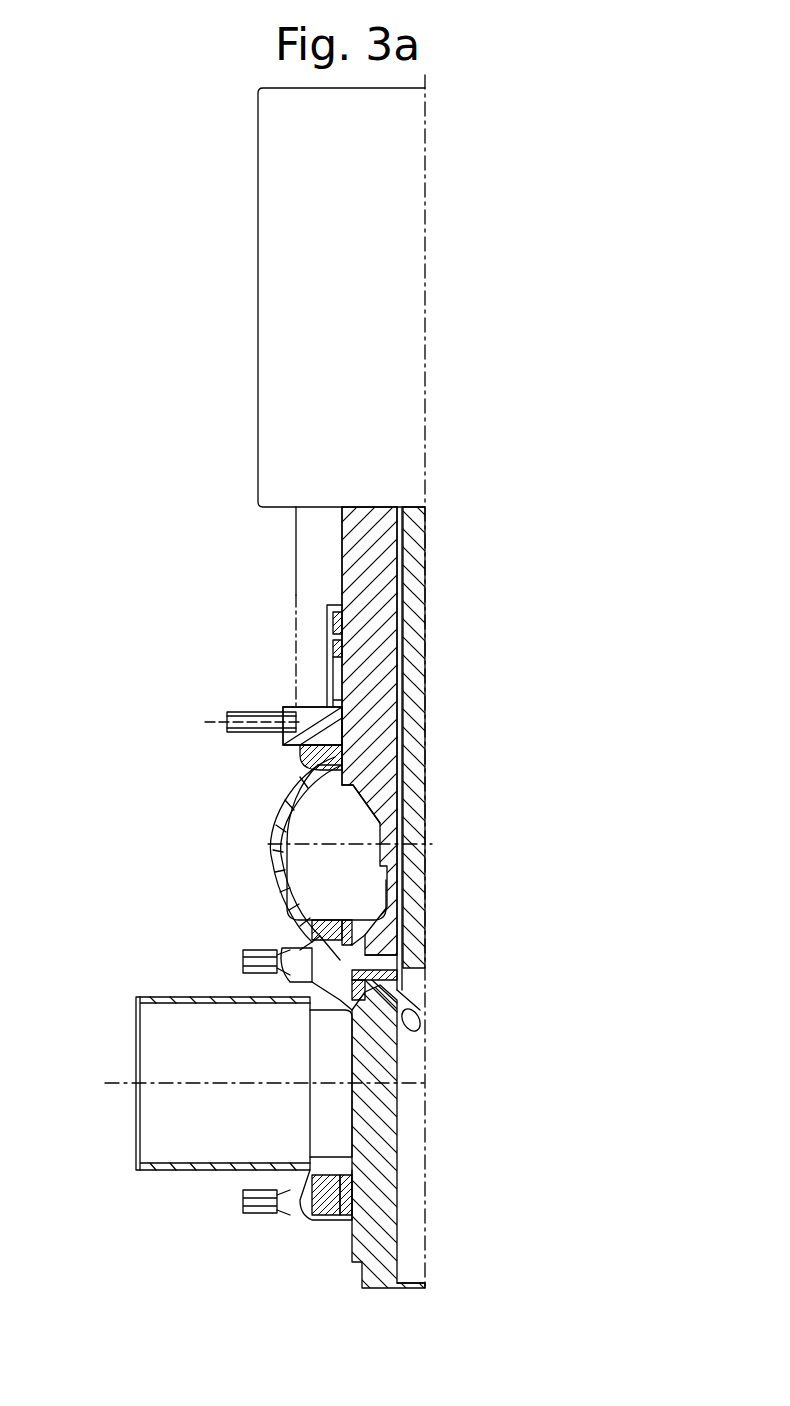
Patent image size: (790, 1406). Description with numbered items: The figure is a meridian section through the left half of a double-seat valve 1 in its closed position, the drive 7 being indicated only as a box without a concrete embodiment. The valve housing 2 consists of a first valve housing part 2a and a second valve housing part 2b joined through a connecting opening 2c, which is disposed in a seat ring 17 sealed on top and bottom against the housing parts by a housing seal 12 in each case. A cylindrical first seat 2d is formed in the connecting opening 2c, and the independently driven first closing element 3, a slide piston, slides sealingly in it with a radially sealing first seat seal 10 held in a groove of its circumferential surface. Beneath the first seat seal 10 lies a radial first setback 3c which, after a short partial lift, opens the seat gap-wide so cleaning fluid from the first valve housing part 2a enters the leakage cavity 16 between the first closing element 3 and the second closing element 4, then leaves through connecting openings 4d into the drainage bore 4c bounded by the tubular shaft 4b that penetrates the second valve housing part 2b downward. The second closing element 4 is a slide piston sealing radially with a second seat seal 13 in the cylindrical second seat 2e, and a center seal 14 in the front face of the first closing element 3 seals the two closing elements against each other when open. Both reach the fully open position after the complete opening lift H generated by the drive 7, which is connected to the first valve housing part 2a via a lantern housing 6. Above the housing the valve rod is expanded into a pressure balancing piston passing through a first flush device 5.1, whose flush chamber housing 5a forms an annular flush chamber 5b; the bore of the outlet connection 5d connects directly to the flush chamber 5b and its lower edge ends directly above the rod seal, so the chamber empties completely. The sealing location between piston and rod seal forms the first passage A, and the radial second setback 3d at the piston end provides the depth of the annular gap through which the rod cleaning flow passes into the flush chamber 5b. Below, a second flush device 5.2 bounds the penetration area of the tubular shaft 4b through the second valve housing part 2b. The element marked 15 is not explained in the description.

The drive 7 is at (242, 318).
The lantern housing 6 is at (296, 545).
The first closing element 3 is at (370, 948).
The housing wall 15 is at (400, 740).
The radial second setback 3d is at (400, 782).
The flush chamber housing 5a is at (330, 640).
The annular flush chamber 5b is at (328, 665).
The outlet connection 5d is at (243, 712).
The first flush device 5.1 is at (160, 720).
The first valve housing part 2a is at (277, 860).
The first passage A is at (338, 768).
The first seat seal 10 is at (347, 930).
The housing seal 12 is at (318, 905).
The first seat 2d is at (305, 935).
The center seal 14 is at (370, 962).
The radial first setback 3c is at (300, 950).
The seat ring 17 is at (315, 965).
The double-seat valve 1 is at (233, 932).
The valve housing 2 is at (221, 960).
The connecting opening 2c is at (395, 975).
The leakage cavity 16 is at (393, 985).
The second seat 2e is at (395, 995).
The connecting openings 4d is at (393, 1005).
The second seat seal 13 is at (335, 1003).
The second closing element 4 is at (400, 1040).
The tubular shaft 4b is at (385, 1138).
The drainage bore 4c is at (427, 1190).
The second valve housing part 2b is at (312, 1180).
The second flush device 5.2 is at (355, 1225).
The complete opening lift H is at (425, 1290).